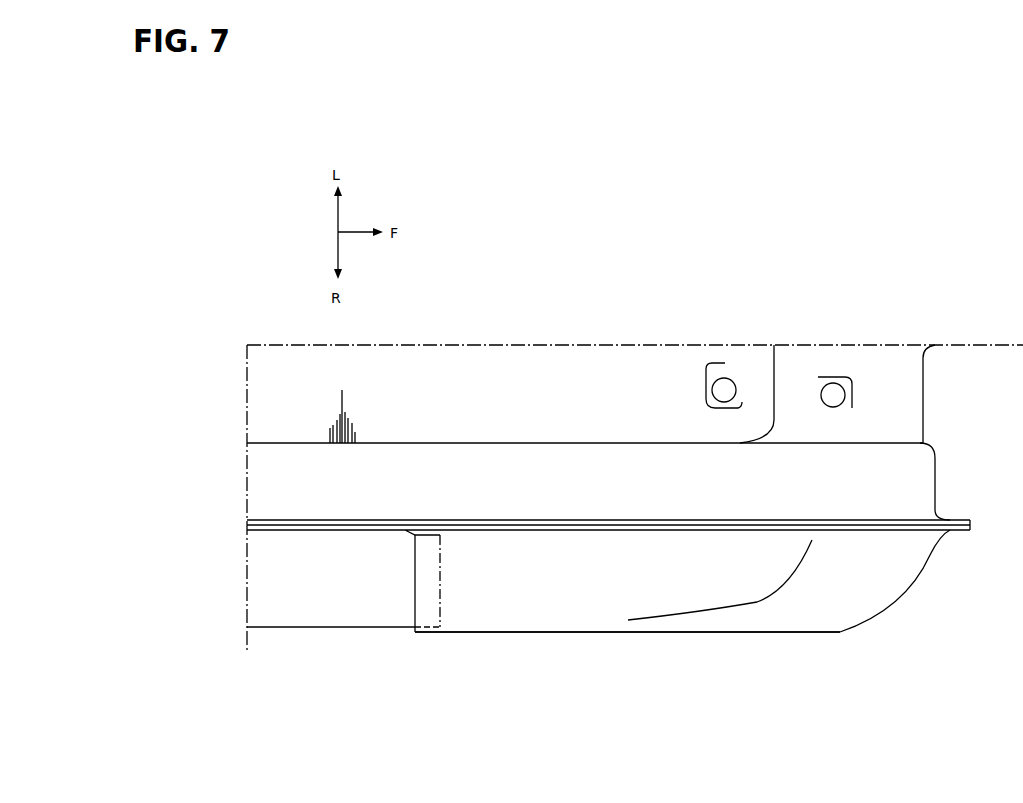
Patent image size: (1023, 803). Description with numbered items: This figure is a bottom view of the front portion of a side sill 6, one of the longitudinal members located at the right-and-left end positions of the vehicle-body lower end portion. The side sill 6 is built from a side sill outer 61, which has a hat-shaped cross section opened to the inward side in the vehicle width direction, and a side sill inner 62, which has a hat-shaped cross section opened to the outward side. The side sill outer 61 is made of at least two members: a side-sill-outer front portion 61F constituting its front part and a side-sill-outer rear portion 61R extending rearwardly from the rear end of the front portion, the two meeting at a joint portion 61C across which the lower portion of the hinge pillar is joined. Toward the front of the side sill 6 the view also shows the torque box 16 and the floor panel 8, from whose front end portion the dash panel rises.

The side sill 6 is at (850, 628).
The floor panel 8 is at (777, 368).
The torque box 16 is at (924, 391).
The side sill outer 61 is at (637, 632).
The side-sill-outer rear portion 61R is at (312, 627).
The joint portion 61C is at (428, 652).
The side-sill-outer front portion 61F is at (552, 632).
The side sill inner 62 is at (430, 441).